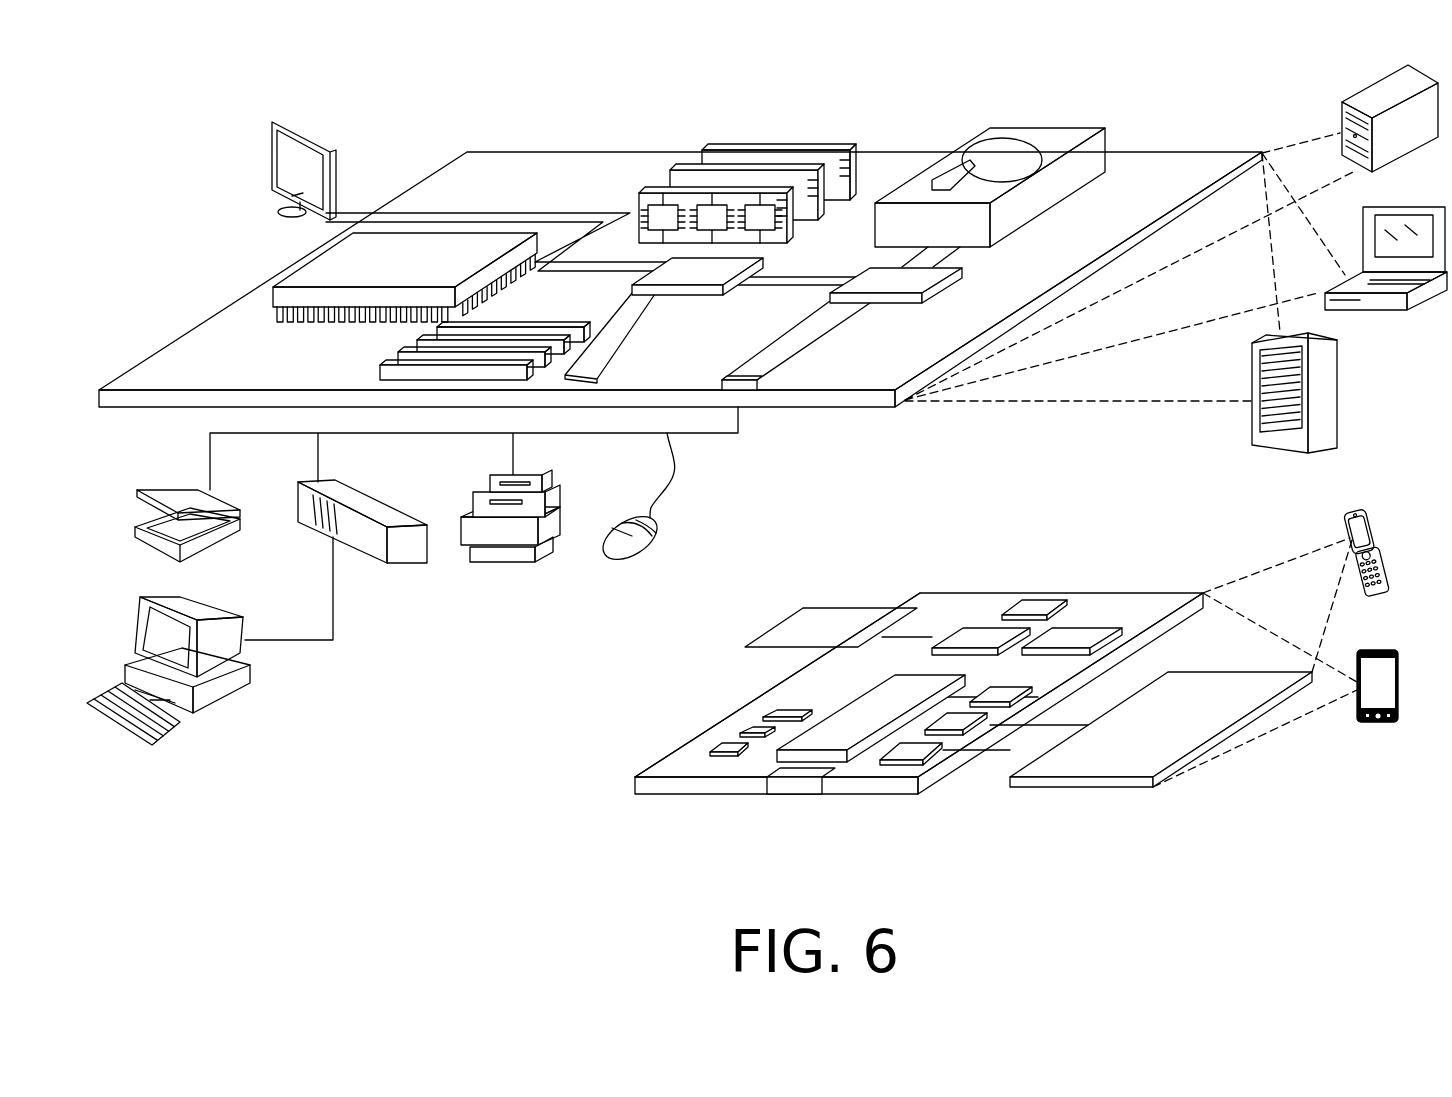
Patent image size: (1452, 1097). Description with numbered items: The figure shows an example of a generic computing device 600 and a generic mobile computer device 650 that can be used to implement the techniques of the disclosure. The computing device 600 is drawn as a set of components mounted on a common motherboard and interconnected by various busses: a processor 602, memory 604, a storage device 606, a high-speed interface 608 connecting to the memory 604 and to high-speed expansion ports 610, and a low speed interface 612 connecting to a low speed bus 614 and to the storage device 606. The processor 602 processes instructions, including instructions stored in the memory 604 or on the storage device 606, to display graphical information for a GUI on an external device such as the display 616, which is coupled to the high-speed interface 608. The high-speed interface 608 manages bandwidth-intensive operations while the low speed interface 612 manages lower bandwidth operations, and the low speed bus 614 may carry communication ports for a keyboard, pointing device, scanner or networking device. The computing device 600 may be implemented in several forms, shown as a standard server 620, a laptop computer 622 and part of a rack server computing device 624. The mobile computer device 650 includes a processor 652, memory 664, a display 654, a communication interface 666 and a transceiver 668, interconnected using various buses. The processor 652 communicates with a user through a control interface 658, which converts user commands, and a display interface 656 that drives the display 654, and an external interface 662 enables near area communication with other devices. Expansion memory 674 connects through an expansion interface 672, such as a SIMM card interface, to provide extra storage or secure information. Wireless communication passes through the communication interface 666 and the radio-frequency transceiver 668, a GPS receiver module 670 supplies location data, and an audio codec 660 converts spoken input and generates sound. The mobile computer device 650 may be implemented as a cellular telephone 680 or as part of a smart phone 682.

The computing device 600 is at (408, 90).
The processor 602 is at (300, 268).
The memory 604 is at (783, 148).
The storage device 606 is at (1035, 130).
The high-speed interface 608 is at (712, 270).
The high-speed expansion ports 610 is at (408, 350).
The low speed interface 612 is at (866, 280).
The low speed bus 614 is at (743, 378).
The display 616 is at (276, 118).
The standard server 620 is at (1365, 95).
The laptop computer 622 is at (1422, 205).
The rack server computing device 624 is at (1340, 394).
The mobile computer device 650 is at (582, 806).
The processor 652 is at (835, 725).
The display 654 is at (1203, 690).
The display interface 656 is at (920, 748).
The control interface 658 is at (962, 722).
The audio codec 660 is at (1005, 690).
The external interface 662 is at (797, 783).
The memory 664 is at (745, 732).
The communication interface 666 is at (980, 628).
The transceiver 668 is at (1080, 628).
The GPS receiver module 670 is at (1035, 603).
The expansion interface 672 is at (897, 605).
The expansion memory 674 is at (808, 607).
The cellular telephone 680 is at (1360, 512).
The smart phone 682 is at (1368, 650).